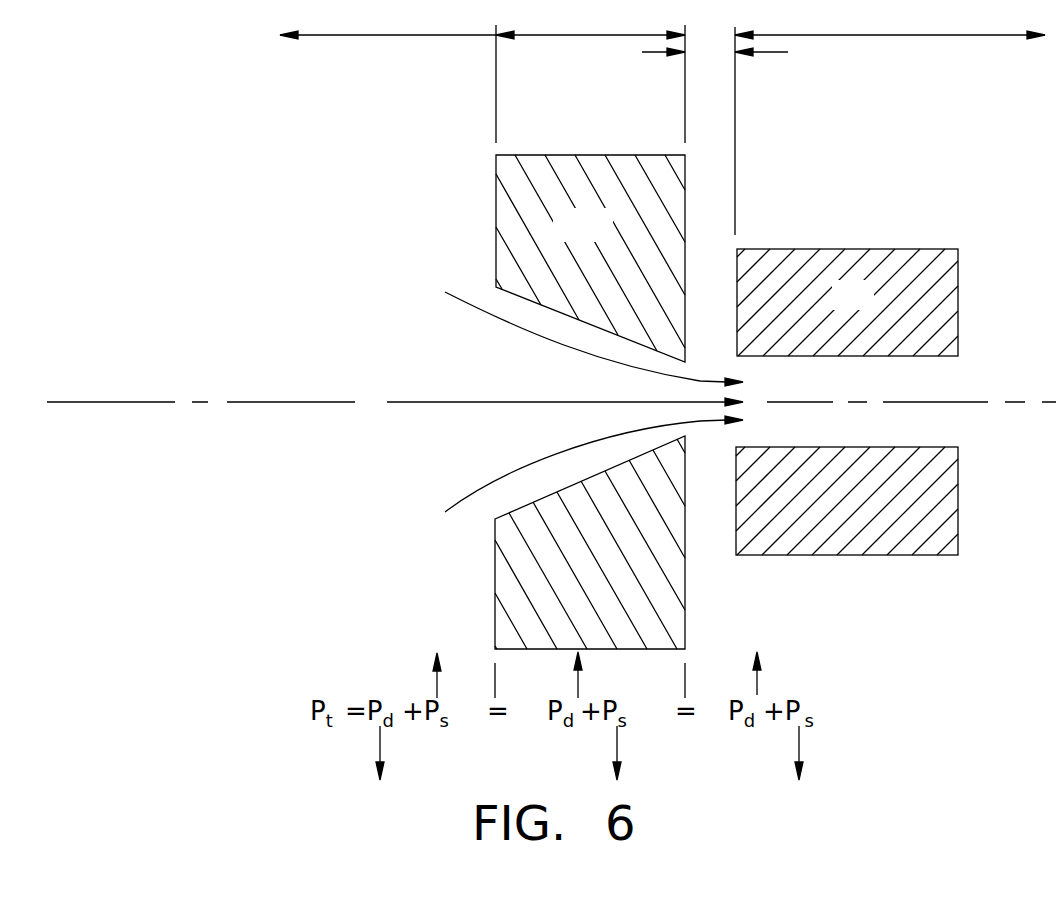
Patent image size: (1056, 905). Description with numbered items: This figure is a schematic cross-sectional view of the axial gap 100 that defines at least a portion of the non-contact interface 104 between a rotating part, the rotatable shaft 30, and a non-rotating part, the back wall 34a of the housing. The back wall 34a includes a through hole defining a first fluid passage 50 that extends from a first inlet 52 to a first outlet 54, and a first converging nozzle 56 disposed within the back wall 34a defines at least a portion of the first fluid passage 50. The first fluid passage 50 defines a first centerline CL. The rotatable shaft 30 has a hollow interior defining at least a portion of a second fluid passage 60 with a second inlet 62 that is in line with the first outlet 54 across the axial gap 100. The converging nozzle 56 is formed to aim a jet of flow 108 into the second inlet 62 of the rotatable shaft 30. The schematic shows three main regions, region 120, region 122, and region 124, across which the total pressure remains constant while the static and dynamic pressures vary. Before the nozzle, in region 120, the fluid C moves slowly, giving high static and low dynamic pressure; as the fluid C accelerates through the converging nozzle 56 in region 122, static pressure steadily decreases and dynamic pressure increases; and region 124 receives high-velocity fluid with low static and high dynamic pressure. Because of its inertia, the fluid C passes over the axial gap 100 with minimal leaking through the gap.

The region 120 is at (388, 71).
The region 122 is at (590, 71).
The region 124 is at (890, 117).
The axial gap 100 is at (777, 64).
The back wall 34a is at (607, 239).
The rotatable shaft 30 is at (868, 307).
The jet of flow 108 is at (741, 362).
The first inlet 52 is at (490, 358).
The first fluid passage 50 is at (566, 392).
The first outlet 54 is at (668, 393).
The second fluid passage 60 is at (862, 436).
The second inlet 62 is at (758, 435).
The first converging nozzle 56 is at (542, 500).
The non-contact interface 104 is at (710, 540).
The first centerline CL is at (323, 402).
The fluid C is at (443, 402).